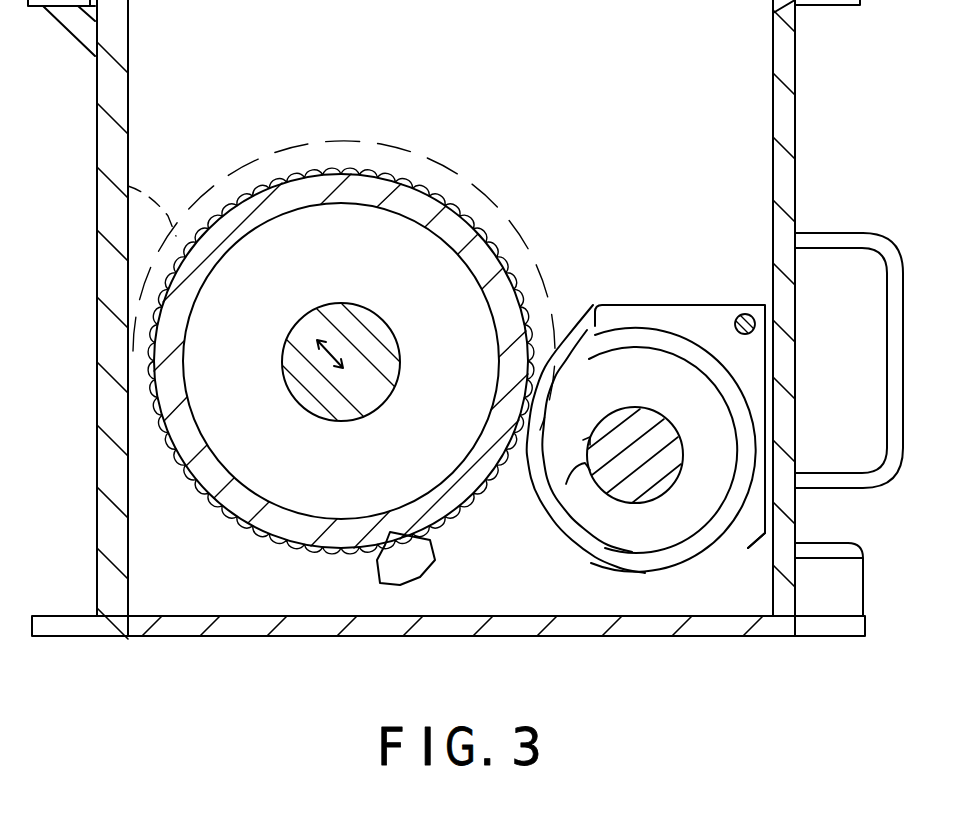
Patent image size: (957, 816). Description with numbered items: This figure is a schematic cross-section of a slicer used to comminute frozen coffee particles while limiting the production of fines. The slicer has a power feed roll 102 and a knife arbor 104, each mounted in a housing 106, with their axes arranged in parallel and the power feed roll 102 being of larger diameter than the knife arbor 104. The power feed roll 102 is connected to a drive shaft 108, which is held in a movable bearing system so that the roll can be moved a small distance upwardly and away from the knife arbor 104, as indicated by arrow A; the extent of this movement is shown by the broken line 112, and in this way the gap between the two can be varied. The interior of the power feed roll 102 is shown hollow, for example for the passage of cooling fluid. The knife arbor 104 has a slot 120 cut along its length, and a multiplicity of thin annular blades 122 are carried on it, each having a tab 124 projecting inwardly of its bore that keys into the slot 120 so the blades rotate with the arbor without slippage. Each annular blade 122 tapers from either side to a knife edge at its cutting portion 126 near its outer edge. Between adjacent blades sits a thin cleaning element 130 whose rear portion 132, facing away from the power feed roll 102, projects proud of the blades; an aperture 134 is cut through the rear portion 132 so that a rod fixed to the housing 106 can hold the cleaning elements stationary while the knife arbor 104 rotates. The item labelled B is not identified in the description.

The power feed roll 102 is at (293, 503).
The knife arbor 104 is at (620, 490).
The housing 106 is at (154, 626).
The drive shaft 108 is at (282, 358).
The broken line 112 is at (92, 161).
The slot 120 is at (588, 463).
The annular blade 122 is at (677, 523).
The tab 124 is at (583, 440).
The cutting portion 126 is at (722, 520).
The cleaning element 130 is at (750, 538).
The rear portion 132 is at (750, 357).
The aperture 134 is at (741, 313).
The arrow A is at (338, 344).
The stop B is at (423, 580).